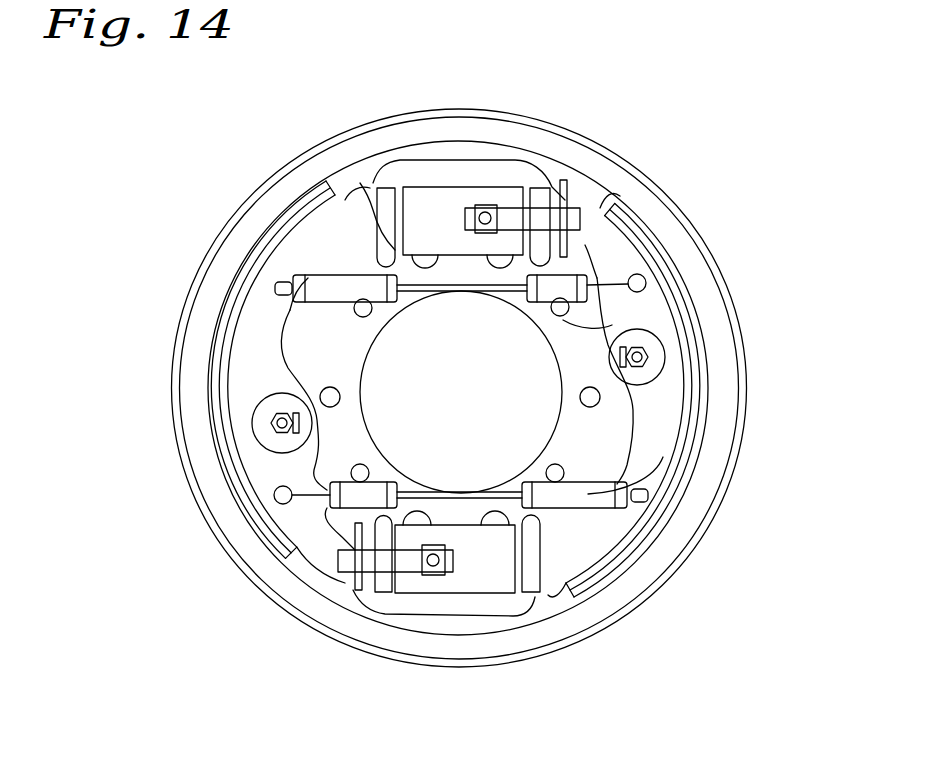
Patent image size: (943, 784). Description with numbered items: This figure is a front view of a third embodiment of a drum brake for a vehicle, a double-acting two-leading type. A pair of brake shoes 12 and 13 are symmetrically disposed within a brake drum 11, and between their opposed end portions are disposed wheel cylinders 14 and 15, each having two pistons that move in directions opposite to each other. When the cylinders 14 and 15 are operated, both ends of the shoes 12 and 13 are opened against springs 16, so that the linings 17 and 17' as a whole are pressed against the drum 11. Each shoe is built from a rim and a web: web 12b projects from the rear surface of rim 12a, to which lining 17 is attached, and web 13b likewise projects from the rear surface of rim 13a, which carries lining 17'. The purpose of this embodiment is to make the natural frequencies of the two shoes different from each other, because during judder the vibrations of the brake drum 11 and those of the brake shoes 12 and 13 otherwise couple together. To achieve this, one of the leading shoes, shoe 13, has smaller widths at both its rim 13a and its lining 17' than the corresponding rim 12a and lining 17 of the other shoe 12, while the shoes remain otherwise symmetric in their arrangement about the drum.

The brake drum 11 is at (692, 529).
The brake shoe 12 is at (690, 313).
The rim 12a is at (596, 580).
The web 12b is at (657, 300).
The brake shoe 13 is at (223, 328).
The rim 13a is at (237, 488).
The web 13b is at (263, 297).
The wheel cylinder 14 is at (452, 198).
The wheel cylinder 15 is at (408, 583).
The spring 16 is at (320, 282).
The lining 17 is at (685, 400).
The lining 17' is at (217, 369).